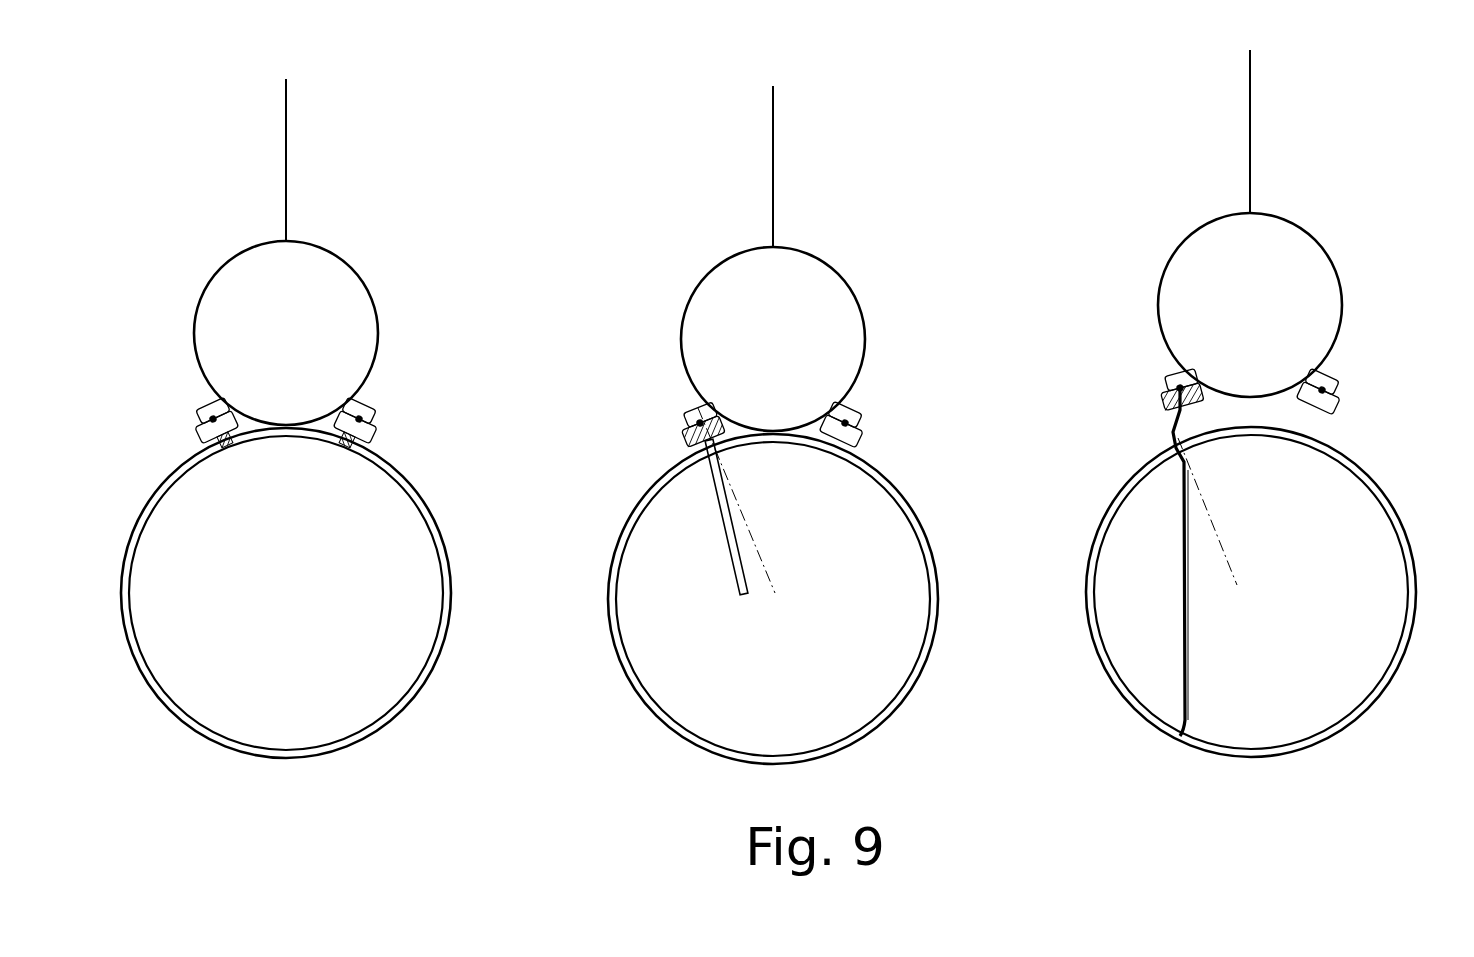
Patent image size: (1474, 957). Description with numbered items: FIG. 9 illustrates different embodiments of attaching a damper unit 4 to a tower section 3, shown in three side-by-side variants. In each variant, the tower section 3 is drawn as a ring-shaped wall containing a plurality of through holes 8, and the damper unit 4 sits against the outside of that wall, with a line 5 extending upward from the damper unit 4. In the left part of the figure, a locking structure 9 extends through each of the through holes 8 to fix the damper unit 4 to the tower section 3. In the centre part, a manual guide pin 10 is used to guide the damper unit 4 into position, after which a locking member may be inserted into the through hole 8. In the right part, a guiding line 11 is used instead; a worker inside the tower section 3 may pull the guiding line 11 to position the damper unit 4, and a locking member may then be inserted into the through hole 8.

The tower section 3 is at (390, 707).
The damper unit 4 is at (376, 316).
The suspension line 5 is at (286, 120).
The through hole 8 is at (236, 468).
The locking structure 9 is at (203, 449).
The manual guide pin 10 is at (738, 577).
The guiding line 11 is at (1187, 647).